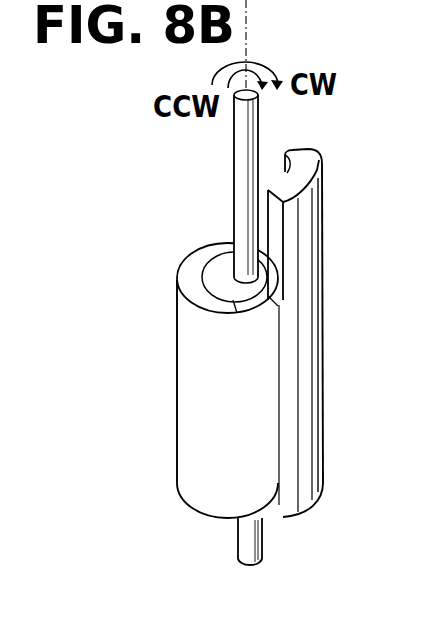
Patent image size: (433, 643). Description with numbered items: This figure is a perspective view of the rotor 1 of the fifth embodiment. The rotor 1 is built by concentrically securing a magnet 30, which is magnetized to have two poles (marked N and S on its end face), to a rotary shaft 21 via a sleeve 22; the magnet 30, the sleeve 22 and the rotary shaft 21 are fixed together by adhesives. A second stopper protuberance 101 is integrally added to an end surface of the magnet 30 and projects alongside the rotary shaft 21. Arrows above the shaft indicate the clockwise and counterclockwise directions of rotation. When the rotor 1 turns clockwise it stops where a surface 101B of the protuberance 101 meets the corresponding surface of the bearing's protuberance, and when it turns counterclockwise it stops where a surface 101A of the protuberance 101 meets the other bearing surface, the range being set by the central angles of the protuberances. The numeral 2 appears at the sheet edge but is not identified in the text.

The rotor 1 is at (169, 327).
The stator 2 is at (424, 469).
The rotary shaft 21 is at (240, 157).
The sleeve 22 is at (223, 278).
The magnet 30 is at (188, 380).
The second stopper protuberance 101 is at (263, 309).
The surface of the protuberance 101A is at (348, 152).
The surface of the protuberance 101B is at (275, 218).